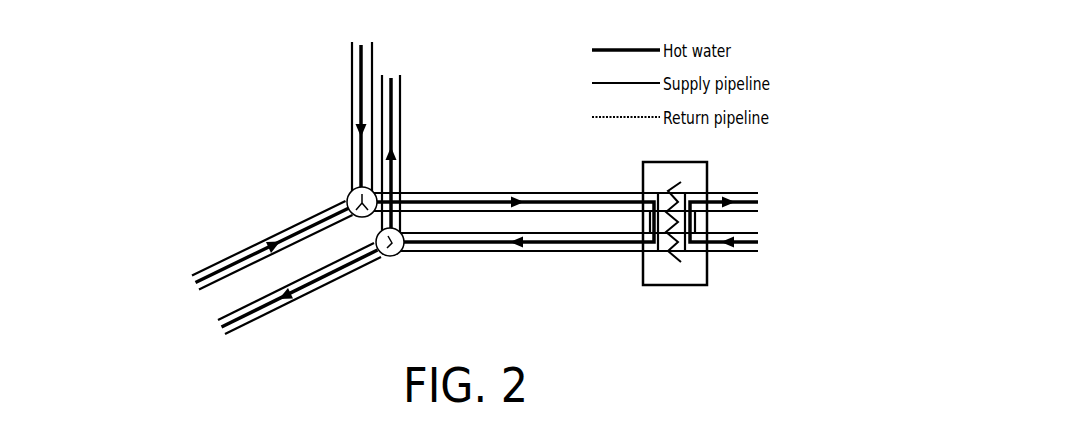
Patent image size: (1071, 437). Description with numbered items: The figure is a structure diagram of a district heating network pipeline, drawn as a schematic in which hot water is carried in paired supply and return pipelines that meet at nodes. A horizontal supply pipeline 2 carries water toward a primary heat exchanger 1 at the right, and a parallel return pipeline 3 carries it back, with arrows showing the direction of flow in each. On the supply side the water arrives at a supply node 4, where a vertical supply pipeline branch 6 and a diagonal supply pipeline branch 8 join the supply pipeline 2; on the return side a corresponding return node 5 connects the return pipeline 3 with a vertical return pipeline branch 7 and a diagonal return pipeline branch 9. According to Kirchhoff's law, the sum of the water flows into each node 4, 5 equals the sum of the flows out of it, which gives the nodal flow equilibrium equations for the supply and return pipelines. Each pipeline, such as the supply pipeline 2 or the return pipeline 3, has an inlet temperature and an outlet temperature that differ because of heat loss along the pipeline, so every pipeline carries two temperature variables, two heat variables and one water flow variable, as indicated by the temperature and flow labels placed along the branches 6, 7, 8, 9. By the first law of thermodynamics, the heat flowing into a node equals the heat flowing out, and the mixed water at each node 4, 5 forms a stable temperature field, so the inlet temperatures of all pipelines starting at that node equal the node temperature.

The primary heat exchanger 1 is at (676, 249).
The primary supply pipeline (horizontal, to heat exchanger) 2 is at (564, 191).
The primary return pipeline (horizontal, from heat exchanger) 3 is at (576, 254).
The supply-side mixing node / substation junction 4 is at (349, 196).
The return-side mixing node / substation junction 5 is at (397, 254).
The vertical supply pipeline branch 6 is at (341, 107).
The vertical return pipeline branch 7 is at (399, 143).
The diagonal supply pipeline branch 8 is at (247, 257).
The diagonal return pipeline branch 9 is at (277, 300).